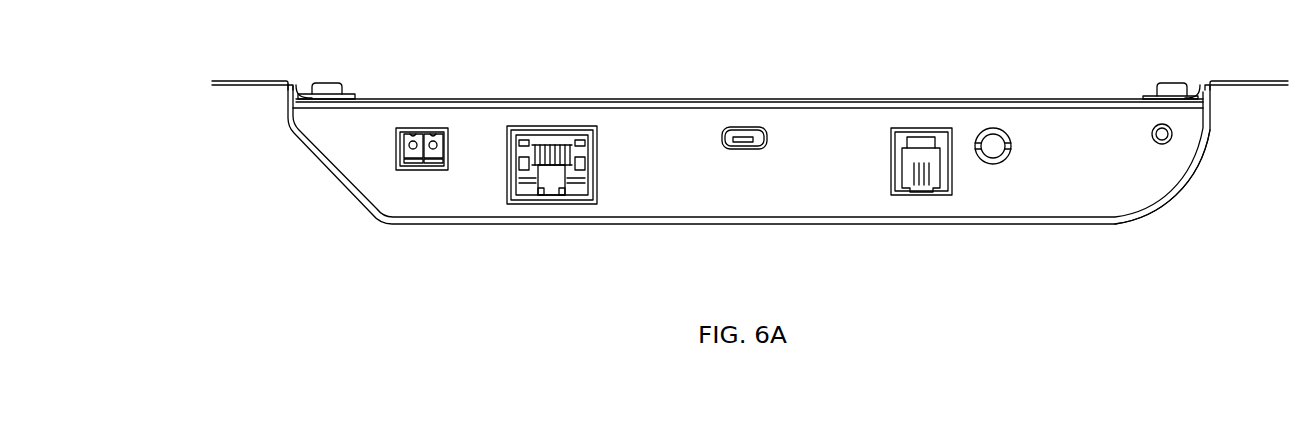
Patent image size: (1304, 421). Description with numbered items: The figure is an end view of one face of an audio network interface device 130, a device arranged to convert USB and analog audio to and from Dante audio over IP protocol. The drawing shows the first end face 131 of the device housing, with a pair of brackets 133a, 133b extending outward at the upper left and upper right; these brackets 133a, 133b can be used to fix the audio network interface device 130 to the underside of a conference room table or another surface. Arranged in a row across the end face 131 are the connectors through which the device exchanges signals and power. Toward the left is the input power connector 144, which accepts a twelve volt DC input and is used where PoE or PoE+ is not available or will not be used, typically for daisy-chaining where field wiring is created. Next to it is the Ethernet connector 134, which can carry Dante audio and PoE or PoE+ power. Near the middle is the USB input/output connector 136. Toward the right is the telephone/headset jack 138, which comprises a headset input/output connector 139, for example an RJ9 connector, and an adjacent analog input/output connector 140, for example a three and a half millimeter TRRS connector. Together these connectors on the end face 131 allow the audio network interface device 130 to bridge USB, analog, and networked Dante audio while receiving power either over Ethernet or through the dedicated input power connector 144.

The audio network interface device 130 is at (304, 186).
The first end face 131 is at (1118, 192).
The bracket 133a is at (238, 82).
The bracket 133b is at (1228, 82).
The Ethernet connector 134 is at (570, 203).
The USB input/output connector 136 is at (740, 150).
The telephone/headset jack 138 is at (885, 118).
The headset input/output connector 139 is at (922, 193).
The analog input/output connector 140 is at (997, 164).
The input power connector 144 is at (417, 128).